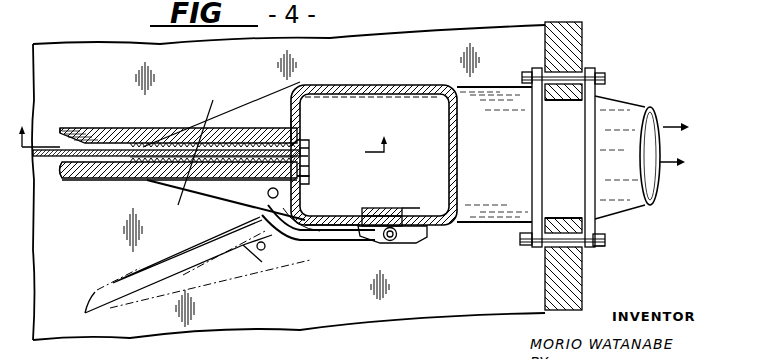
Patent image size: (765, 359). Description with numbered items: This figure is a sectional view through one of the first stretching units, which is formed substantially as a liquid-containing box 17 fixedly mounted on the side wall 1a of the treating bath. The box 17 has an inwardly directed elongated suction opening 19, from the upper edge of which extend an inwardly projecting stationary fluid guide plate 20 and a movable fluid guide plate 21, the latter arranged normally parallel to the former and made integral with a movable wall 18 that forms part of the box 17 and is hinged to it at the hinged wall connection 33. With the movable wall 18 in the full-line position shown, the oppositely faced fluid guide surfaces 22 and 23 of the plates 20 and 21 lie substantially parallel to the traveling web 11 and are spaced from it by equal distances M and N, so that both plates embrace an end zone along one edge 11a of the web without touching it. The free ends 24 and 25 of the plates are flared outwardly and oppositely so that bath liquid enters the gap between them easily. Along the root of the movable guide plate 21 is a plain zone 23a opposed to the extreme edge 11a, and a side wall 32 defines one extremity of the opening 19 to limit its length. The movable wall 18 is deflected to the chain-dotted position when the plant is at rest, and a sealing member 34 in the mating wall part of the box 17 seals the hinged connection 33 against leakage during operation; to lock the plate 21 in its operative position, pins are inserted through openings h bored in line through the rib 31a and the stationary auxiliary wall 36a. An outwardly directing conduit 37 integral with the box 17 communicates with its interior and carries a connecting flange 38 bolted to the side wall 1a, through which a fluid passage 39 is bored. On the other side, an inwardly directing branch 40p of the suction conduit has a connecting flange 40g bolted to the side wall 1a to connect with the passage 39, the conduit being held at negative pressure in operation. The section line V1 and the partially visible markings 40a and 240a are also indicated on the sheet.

The side wall 1a is at (583, 54).
The traveling web 11 is at (45, 155).
The edge of the web 11a is at (296, 143).
The liquid-containing box 17 is at (404, 88).
The movable wall 18 is at (320, 222).
The suction opening 19 is at (307, 156).
The stationary fluid guide plate 20 is at (109, 130).
The movable fluid guide plate 21 is at (165, 163).
The fluid guide surface 22 is at (145, 146).
The fluid guide surface 23 is at (118, 176).
The plain zone 23a is at (307, 172).
The free end of the guide plate 24 is at (58, 130).
The free end of the guide plate 25 is at (62, 168).
The rib 31a is at (283, 204).
The side wall 32 is at (301, 146).
The hinged wall connection 33 is at (393, 241).
The sealing member 34 is at (372, 224).
The stationary auxiliary wall 36a is at (300, 212).
The outwardly directing conduit 37 is at (500, 221).
The connecting flange 38 is at (529, 80).
The fluid passage 39 is at (600, 100).
The inwardly directing branch 40p is at (647, 184).
The connecting flange 40g is at (592, 247).
The pipe 40a is at (98, 6).
The pipe 240a is at (741, 6).
The spacing distance M is at (221, 143).
The spacing distance N is at (174, 220).
The openings h is at (268, 196).
The section line V1 is at (204, 131).